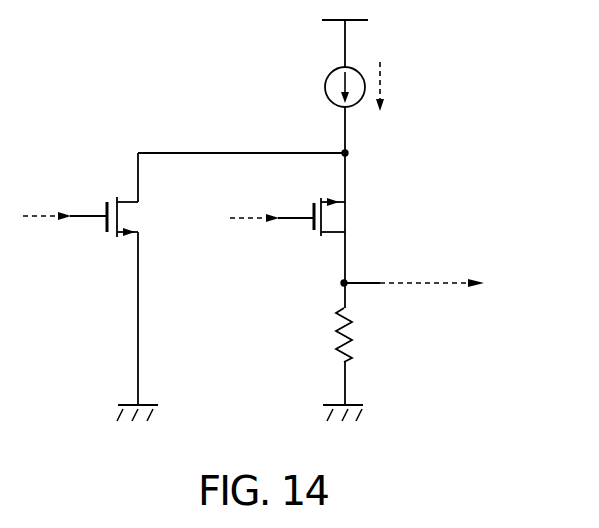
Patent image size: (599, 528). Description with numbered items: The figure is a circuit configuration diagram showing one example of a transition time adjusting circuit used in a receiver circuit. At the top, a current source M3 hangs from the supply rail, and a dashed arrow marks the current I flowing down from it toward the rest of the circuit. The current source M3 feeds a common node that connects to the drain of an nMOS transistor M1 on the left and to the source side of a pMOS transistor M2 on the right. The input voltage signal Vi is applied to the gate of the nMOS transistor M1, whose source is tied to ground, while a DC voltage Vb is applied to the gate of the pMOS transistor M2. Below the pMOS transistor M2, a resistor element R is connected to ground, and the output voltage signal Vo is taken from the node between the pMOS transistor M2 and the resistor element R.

The nMOS transistor M1 is at (111, 205).
The pMOS transistor M2 is at (317, 205).
The current source M3 is at (329, 87).
The bias current I is at (386, 86).
The resistor element R is at (333, 335).
The input voltage signal Vi is at (65, 206).
The DC voltage Vb is at (272, 207).
The output voltage signal Vo is at (414, 274).